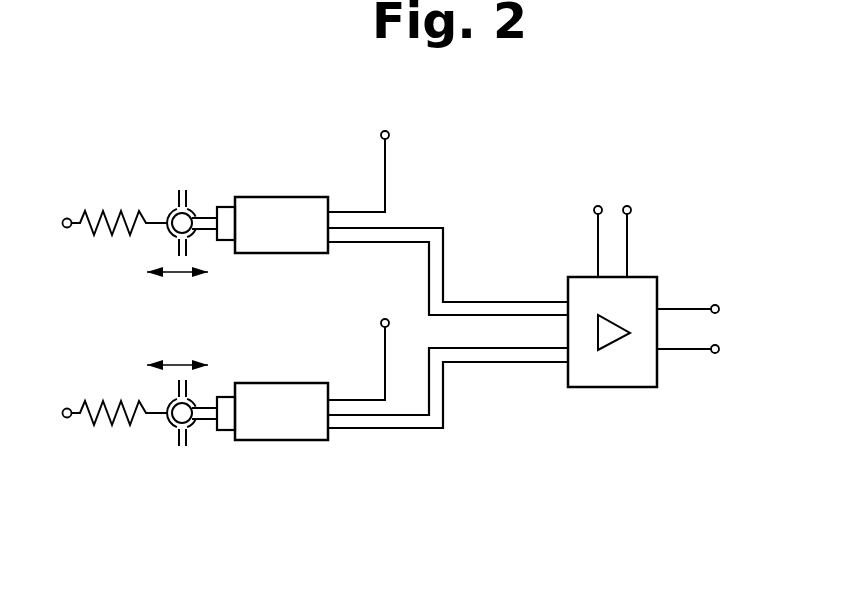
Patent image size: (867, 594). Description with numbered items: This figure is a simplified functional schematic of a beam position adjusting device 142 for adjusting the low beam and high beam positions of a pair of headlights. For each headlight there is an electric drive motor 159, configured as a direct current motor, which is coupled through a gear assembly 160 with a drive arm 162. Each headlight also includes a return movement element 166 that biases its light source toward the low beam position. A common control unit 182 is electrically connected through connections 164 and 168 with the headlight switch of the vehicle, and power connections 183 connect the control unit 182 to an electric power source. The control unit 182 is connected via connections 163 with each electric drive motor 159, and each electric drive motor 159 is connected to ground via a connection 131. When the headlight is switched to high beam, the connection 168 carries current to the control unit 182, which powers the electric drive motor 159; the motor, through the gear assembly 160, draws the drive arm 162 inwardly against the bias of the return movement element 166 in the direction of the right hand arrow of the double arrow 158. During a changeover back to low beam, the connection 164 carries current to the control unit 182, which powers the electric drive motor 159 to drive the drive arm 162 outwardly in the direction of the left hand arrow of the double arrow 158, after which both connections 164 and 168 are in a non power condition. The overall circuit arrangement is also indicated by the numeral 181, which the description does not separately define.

The connection 131 is at (389, 133).
The beam position adjusting device 142 is at (253, 138).
The double arrow 158 is at (177, 273).
The electric drive motor 159 is at (323, 197).
The gear assembly 160 is at (228, 212).
The drive arm 162 is at (208, 215).
The connections 163 is at (493, 362).
The connection 164 is at (722, 351).
The return movement element 166 is at (118, 208).
The connection 168 is at (720, 308).
The control circuit 181 is at (448, 398).
The control unit 182 is at (622, 373).
The power connections 183 is at (626, 206).